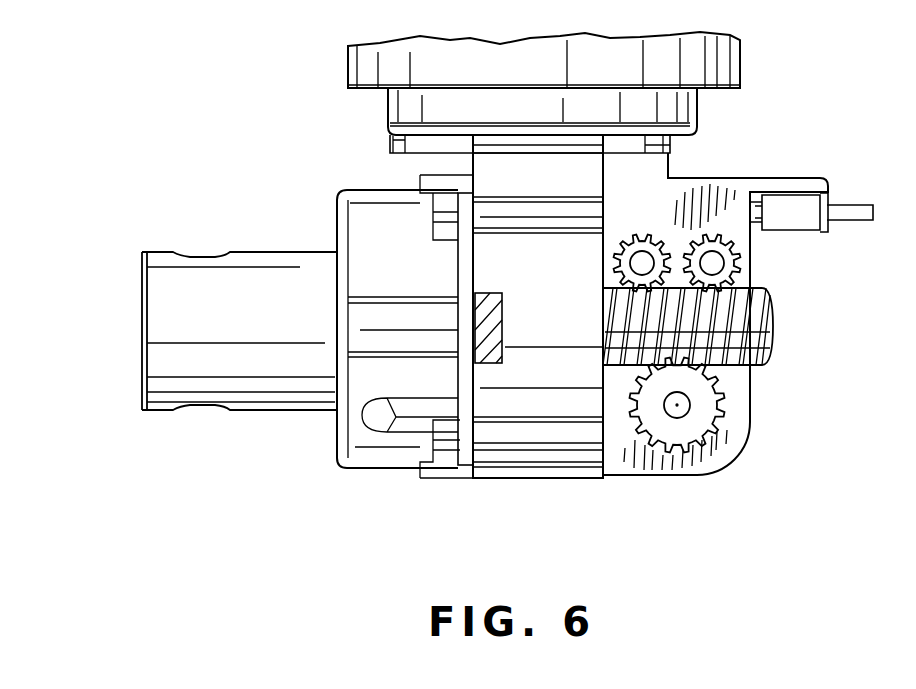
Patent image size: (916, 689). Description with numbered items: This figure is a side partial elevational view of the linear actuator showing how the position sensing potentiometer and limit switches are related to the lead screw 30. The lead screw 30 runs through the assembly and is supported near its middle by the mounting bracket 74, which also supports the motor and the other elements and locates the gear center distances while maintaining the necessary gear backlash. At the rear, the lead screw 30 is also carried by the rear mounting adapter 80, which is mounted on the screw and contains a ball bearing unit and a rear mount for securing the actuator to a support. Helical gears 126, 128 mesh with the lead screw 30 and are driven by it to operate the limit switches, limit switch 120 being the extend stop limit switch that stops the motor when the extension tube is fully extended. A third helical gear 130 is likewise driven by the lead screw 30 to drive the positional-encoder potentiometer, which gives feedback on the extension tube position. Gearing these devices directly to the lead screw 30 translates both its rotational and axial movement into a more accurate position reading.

The lead screw 30 is at (768, 355).
The mounting bracket 74 is at (647, 477).
The rear mounting adapter 80 is at (257, 410).
The limit switch 120 is at (812, 222).
The helical gear 126 is at (657, 237).
The helical gear 128 is at (737, 257).
The helical gear 130 is at (678, 437).